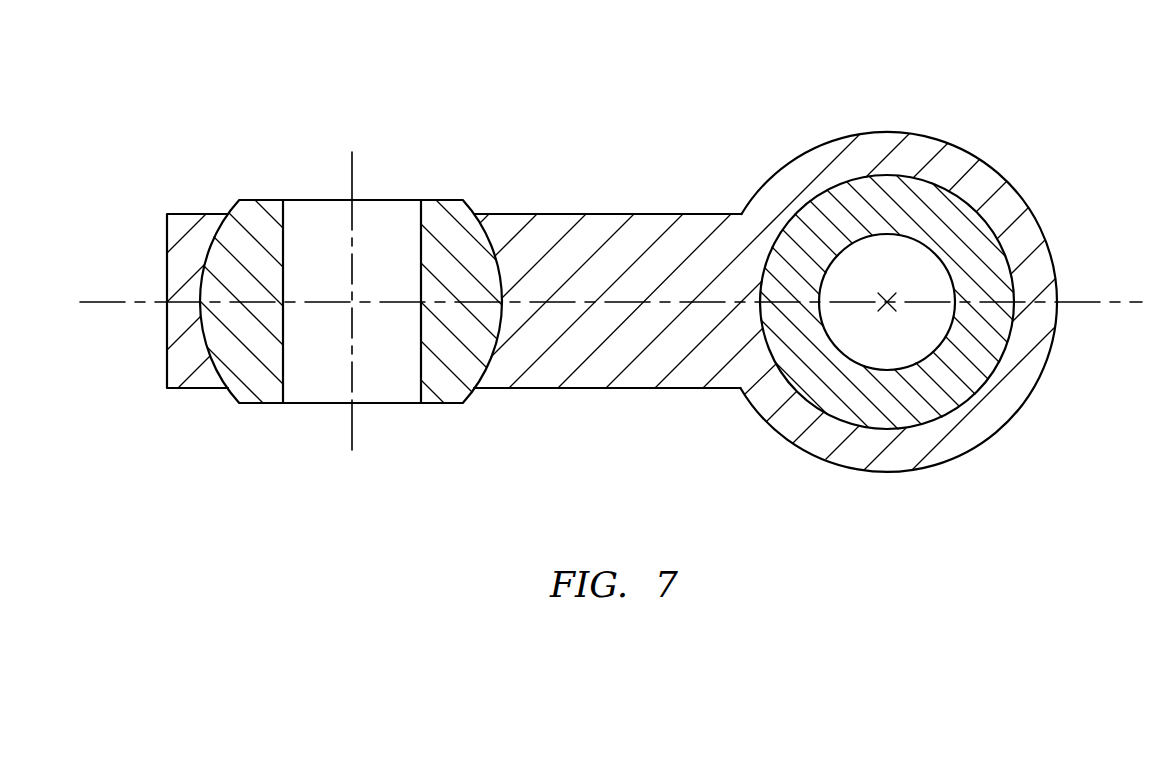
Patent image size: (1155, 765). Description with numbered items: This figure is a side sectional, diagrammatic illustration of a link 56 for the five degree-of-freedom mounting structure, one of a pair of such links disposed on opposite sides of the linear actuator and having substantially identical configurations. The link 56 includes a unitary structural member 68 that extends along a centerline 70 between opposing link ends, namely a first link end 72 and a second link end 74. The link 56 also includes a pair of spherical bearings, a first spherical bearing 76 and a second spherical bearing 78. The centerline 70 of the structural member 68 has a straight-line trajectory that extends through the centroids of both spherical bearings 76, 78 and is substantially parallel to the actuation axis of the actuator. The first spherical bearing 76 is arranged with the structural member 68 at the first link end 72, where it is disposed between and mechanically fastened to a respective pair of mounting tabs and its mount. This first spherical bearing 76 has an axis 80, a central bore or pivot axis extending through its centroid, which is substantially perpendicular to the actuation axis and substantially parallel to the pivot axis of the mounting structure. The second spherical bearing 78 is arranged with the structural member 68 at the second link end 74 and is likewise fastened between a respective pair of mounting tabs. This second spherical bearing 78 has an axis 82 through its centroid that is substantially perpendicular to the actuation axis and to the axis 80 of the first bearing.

The link 56 is at (709, 90).
The unitary structural member 68 is at (607, 401).
The centerline 70 is at (1115, 307).
The first link end 72 is at (167, 363).
The second link end 74 is at (1053, 340).
The first spherical bearing 76 is at (243, 428).
The second spherical bearing 78 is at (831, 430).
The axis of first spherical bearing 80 is at (352, 432).
The axis of second spherical bearing 82 is at (887, 305).